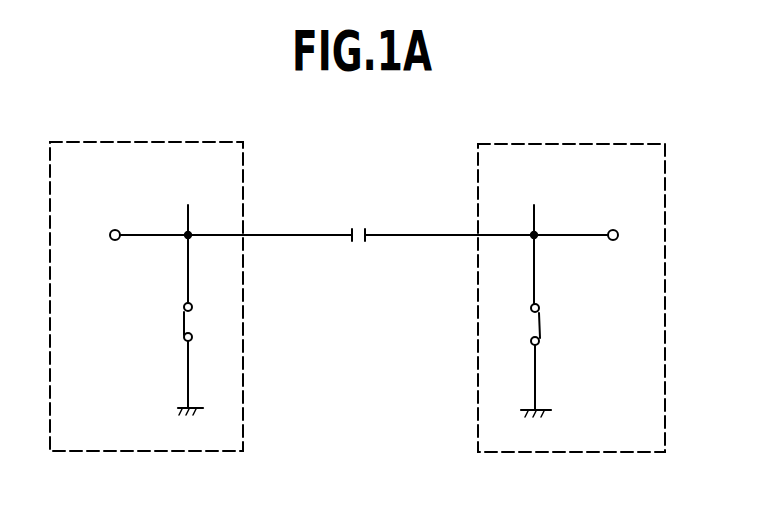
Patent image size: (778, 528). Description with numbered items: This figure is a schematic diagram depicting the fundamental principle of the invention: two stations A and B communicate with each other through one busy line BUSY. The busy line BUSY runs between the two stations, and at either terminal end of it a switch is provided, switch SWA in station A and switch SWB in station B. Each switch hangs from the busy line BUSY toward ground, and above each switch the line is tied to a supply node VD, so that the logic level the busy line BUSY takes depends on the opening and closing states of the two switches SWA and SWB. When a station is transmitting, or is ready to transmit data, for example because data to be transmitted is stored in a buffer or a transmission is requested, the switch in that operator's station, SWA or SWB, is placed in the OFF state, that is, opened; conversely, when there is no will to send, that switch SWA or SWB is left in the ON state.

The station A is at (165, 452).
The station B is at (585, 452).
The busy line BUSY is at (321, 237).
The supply voltage node VD is at (360, 238).
The switch SWA is at (184, 318).
The switch SWB is at (540, 317).